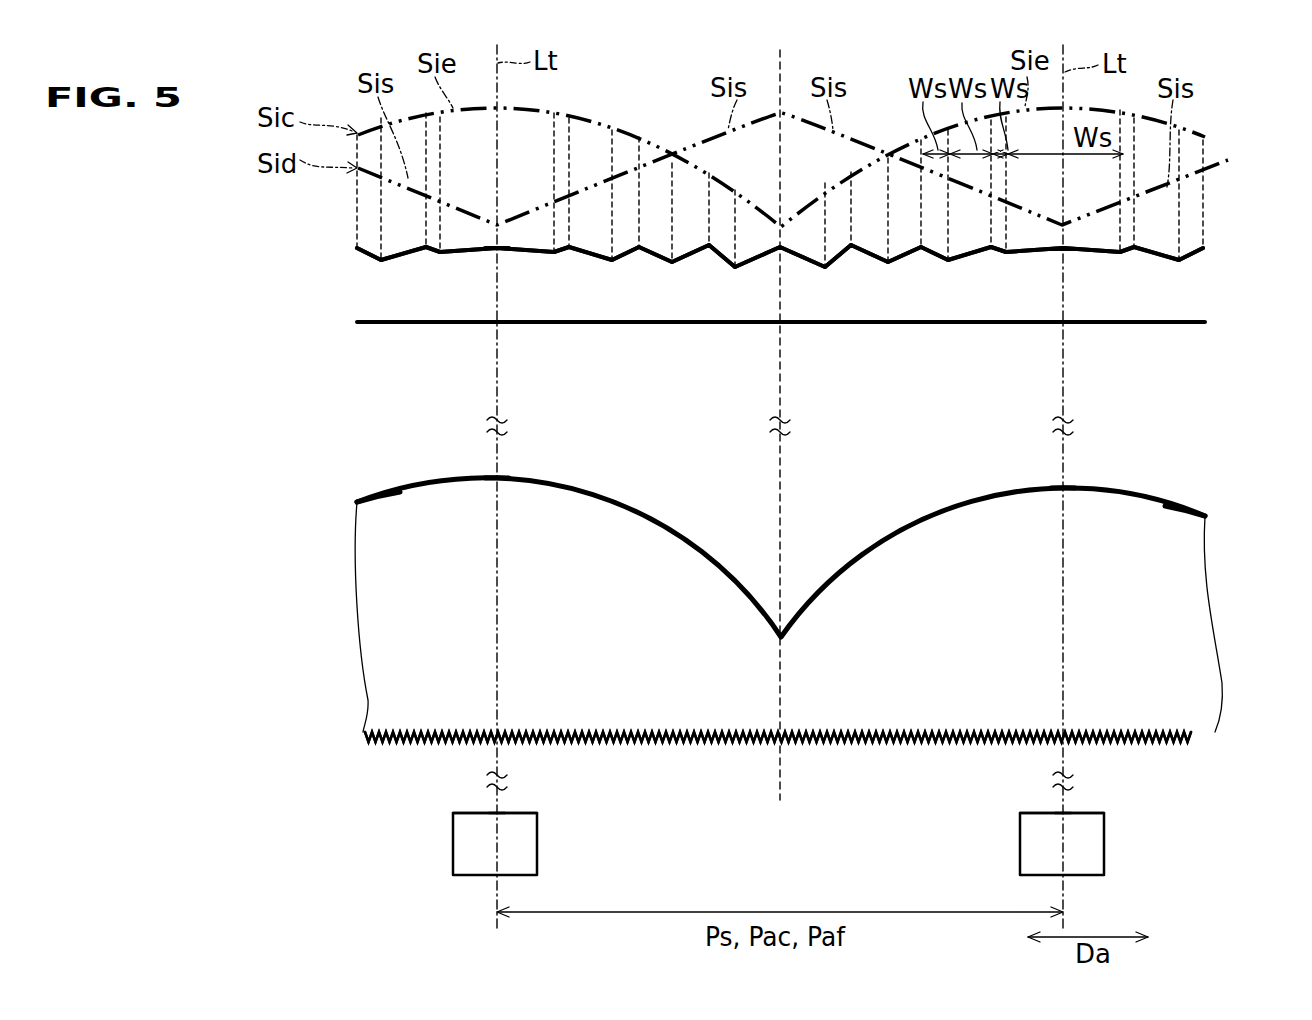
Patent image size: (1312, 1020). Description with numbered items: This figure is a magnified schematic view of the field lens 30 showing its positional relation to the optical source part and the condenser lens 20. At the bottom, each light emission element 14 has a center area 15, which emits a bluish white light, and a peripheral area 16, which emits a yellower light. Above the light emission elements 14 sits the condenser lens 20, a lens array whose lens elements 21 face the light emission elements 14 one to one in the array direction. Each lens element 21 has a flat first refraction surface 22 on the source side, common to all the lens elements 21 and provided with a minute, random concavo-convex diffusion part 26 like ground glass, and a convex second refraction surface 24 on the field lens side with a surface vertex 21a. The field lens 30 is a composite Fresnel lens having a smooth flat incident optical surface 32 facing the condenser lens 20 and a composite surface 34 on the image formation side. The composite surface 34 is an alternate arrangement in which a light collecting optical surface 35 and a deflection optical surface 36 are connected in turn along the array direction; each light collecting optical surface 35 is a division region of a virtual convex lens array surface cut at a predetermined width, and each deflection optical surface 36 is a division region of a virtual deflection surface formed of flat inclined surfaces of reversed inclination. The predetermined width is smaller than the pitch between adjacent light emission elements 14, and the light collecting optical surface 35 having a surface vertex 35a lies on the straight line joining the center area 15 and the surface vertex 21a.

The light emission element 14 is at (453, 840).
The center area 15 is at (493, 813).
The peripheral area 16 is at (473, 813).
The condenser lens 20 is at (355, 658).
The lens element 21 is at (407, 590).
The surface vertex 21a is at (495, 477).
The first refraction surface 22 is at (400, 740).
The second refraction surface 24 is at (383, 490).
The diffusion part 26 is at (724, 762).
The field lens 30 is at (352, 279).
The incident optical surface 32 is at (373, 323).
The composite surface 34 is at (373, 248).
The light collecting optical surface 35 is at (402, 253).
The surface vertex 35a is at (497, 245).
The deflection optical surface 36 is at (433, 250).